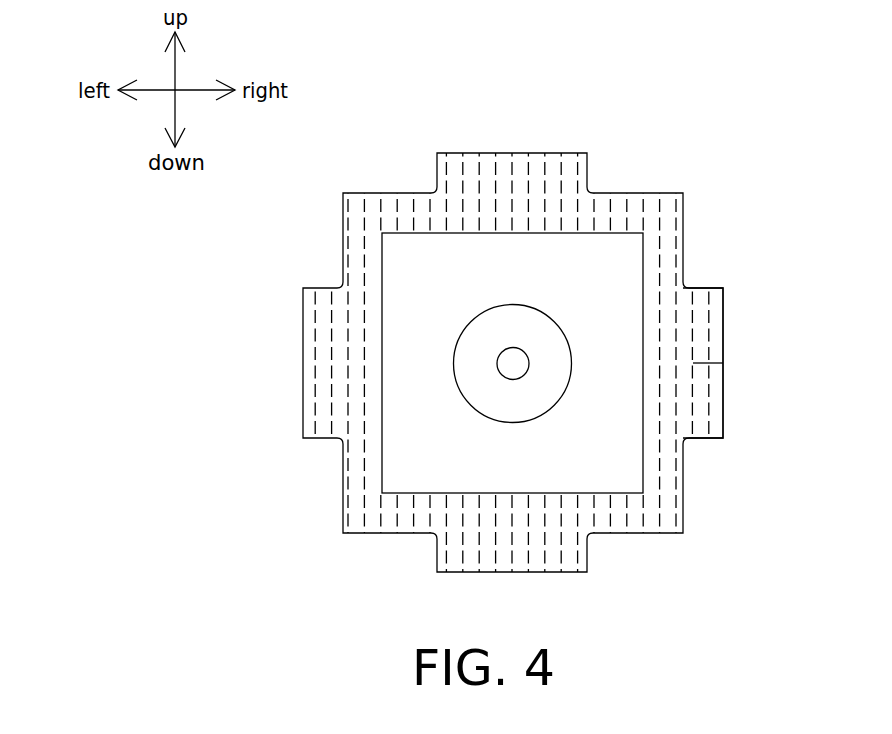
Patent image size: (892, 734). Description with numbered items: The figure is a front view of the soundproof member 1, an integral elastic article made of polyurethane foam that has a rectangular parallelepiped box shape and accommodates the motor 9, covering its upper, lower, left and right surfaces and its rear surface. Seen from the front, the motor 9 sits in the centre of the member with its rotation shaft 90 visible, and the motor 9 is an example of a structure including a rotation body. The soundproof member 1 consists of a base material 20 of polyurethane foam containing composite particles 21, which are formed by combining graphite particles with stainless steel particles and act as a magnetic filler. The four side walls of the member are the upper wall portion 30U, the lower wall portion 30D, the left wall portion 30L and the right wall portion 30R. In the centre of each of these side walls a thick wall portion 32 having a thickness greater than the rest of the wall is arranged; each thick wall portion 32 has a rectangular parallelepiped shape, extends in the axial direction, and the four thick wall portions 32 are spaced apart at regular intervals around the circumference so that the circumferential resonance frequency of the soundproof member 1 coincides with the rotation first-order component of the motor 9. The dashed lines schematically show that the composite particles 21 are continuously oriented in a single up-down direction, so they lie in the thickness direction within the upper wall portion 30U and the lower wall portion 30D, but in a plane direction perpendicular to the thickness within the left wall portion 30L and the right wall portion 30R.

The soundproof member 1 is at (630, 198).
The motor 9 is at (412, 309).
The rotation shaft 90 is at (505, 361).
The base material 20 is at (713, 310).
The composite particles 21 is at (723, 363).
The upper wall portion 30U is at (488, 207).
The lower wall portion 30D is at (522, 518).
The left wall portion 30L is at (337, 321).
The right wall portion 30R is at (668, 409).
The thick wall portion 32 is at (522, 172).